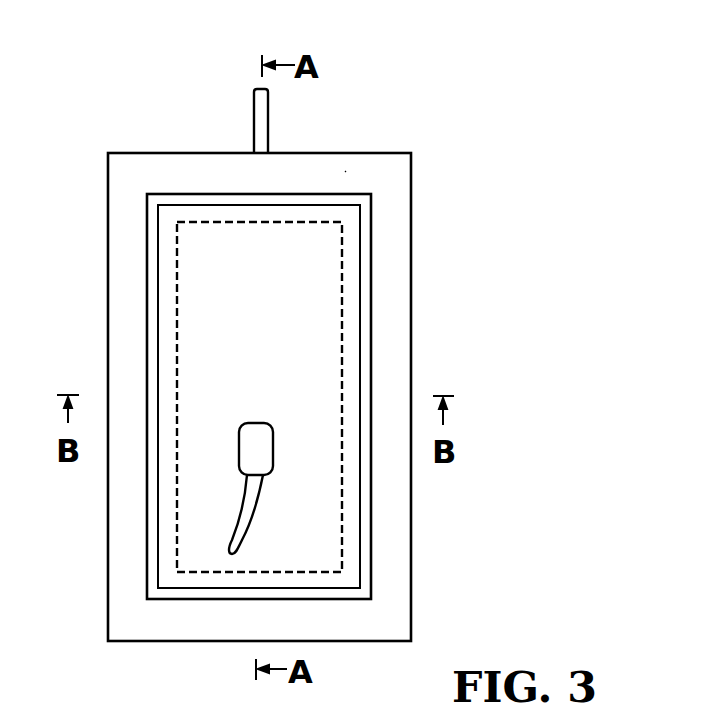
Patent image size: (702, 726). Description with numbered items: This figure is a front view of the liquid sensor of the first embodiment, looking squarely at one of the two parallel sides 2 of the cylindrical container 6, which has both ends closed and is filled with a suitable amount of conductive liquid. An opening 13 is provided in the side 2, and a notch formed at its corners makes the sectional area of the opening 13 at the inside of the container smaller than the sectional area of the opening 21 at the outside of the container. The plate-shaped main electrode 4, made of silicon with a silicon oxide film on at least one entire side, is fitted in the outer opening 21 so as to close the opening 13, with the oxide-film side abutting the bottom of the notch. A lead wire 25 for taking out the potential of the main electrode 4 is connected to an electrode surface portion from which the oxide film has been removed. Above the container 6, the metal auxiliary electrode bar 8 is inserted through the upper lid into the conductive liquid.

The side 2 is at (392, 247).
The plate-shaped main electrode 4 is at (360, 310).
The cylindrical container 6 is at (345, 172).
The metal auxiliary electrode bar 8 is at (265, 130).
The opening 13 is at (338, 500).
The opening 21 is at (367, 368).
The lead wire 25 is at (250, 533).